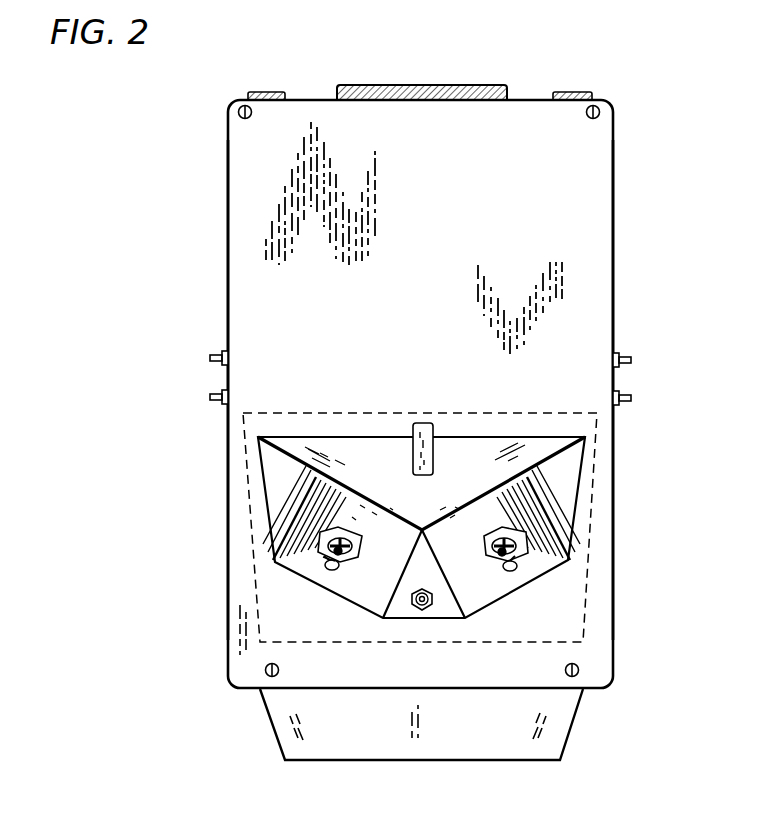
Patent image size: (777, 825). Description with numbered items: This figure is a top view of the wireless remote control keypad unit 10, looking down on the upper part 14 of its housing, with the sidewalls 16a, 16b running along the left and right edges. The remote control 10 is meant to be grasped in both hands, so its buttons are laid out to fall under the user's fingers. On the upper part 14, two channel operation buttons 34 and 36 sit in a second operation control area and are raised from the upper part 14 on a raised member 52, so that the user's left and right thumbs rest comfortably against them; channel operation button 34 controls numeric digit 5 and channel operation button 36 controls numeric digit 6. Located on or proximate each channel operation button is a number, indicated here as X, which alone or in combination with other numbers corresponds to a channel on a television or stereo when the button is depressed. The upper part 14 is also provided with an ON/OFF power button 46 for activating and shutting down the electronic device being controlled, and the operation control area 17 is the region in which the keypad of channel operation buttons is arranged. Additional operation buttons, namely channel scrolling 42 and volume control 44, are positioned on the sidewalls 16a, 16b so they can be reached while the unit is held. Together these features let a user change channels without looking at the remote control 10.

The wireless remote control keypad unit 10 is at (157, 132).
The upper part 14 is at (433, 302).
The sidewall 16a is at (613, 235).
The sidewall 16b is at (228, 252).
The operation control area 17 is at (353, 419).
The channel operation button 34 is at (324, 562).
The channel operation button 36 is at (521, 562).
The channel scrolling buttons 42 is at (638, 343).
The volume control buttons 44 is at (205, 343).
The power button 46 is at (420, 612).
The raised member 52 is at (491, 505).
The number X is at (562, 626).
The numeric digit 5 is at (294, 616).
The numeric digit 6 is at (539, 620).